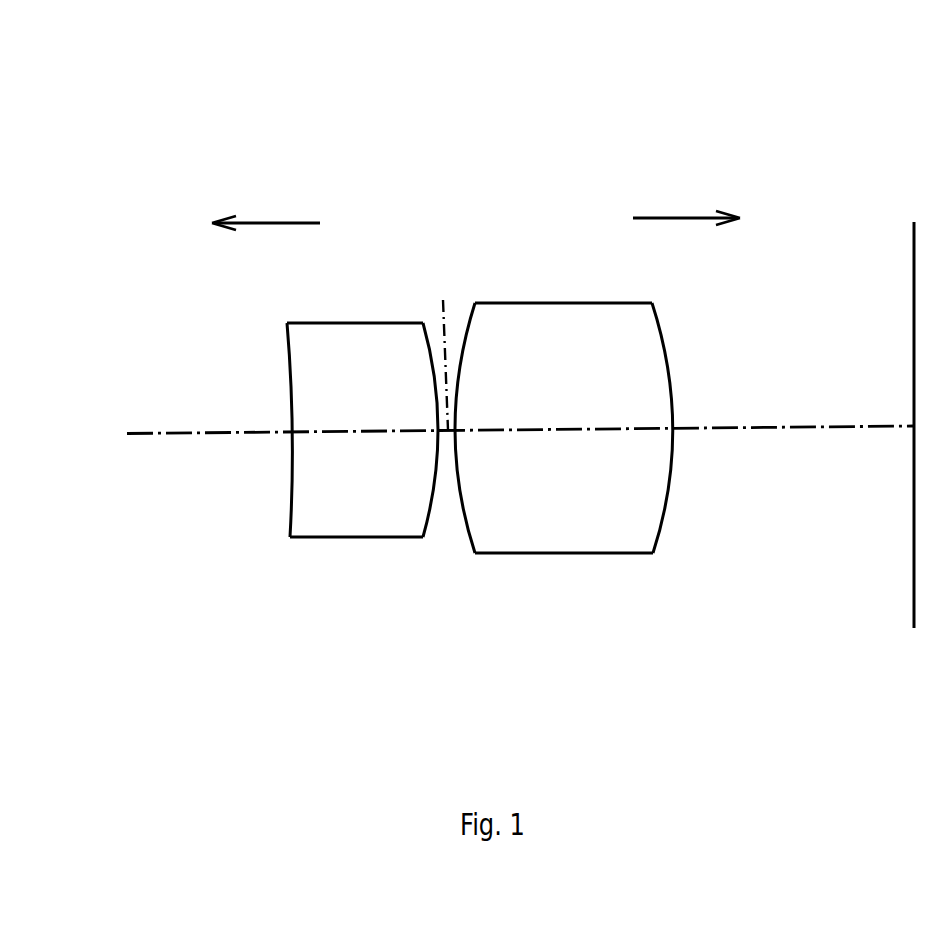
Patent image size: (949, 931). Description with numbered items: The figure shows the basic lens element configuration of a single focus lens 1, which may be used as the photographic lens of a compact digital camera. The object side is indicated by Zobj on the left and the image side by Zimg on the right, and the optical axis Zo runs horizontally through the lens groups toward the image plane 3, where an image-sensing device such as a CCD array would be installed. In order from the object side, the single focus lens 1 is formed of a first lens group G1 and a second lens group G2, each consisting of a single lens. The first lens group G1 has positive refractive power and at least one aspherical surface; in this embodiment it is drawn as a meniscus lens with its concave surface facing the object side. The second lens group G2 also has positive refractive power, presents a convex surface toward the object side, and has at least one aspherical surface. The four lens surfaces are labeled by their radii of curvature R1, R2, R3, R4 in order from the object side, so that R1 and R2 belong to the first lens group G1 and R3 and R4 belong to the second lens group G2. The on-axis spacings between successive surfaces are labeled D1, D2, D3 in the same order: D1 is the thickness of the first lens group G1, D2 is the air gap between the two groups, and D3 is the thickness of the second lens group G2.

The single focus lens 1 is at (473, 187).
The image plane 3 is at (912, 240).
The first lens group G1 is at (355, 322).
The second lens group G2 is at (565, 303).
The on-axis spacing D1 is at (362, 412).
The on-axis spacing D2 is at (445, 348).
The on-axis spacing D3 is at (563, 411).
The radius of curvature R1 is at (292, 512).
The radius of curvature R2 is at (427, 512).
The radius of curvature R3 is at (465, 532).
The radius of curvature R4 is at (662, 518).
The optical axis Zo is at (150, 434).
The object side Zobj is at (281, 222).
The image side Zimg is at (673, 218).